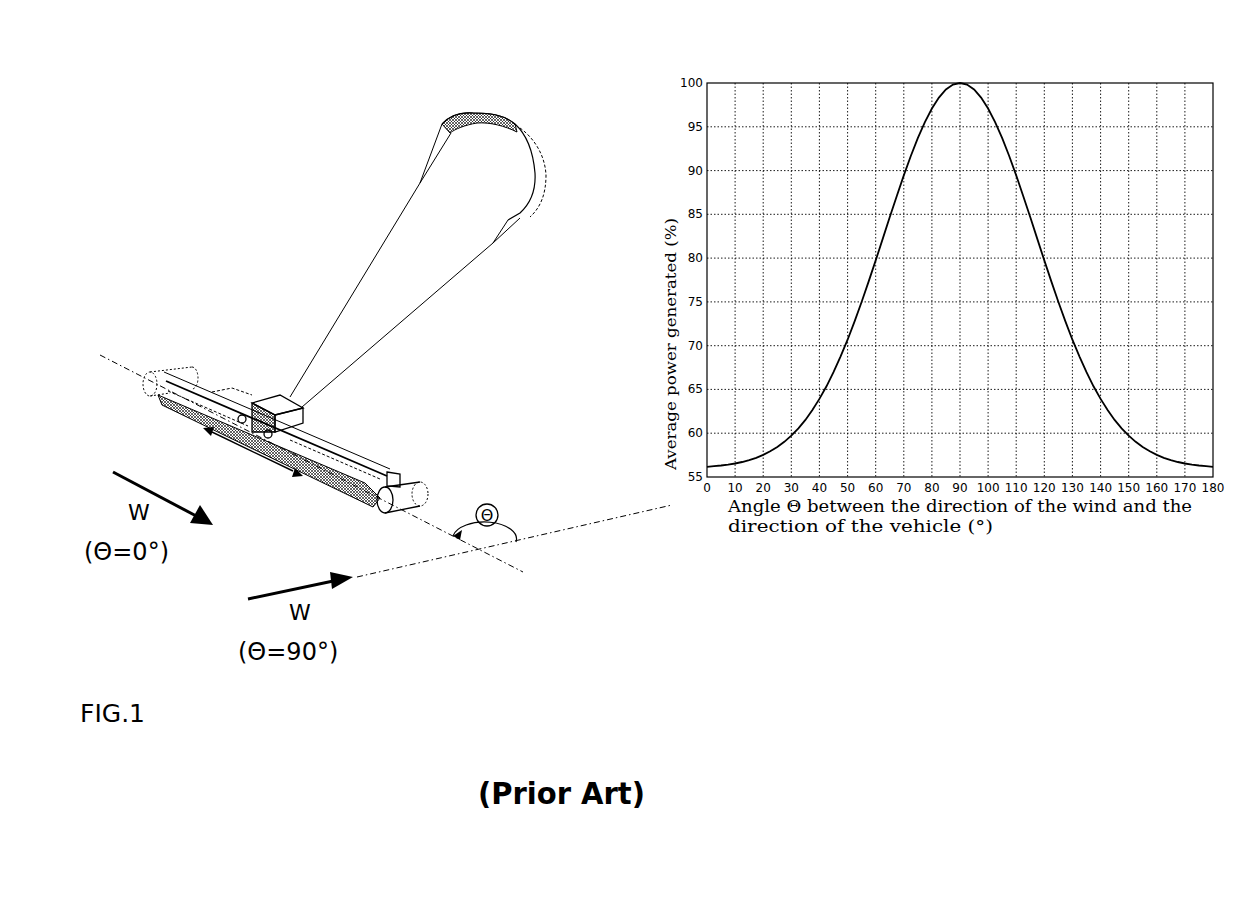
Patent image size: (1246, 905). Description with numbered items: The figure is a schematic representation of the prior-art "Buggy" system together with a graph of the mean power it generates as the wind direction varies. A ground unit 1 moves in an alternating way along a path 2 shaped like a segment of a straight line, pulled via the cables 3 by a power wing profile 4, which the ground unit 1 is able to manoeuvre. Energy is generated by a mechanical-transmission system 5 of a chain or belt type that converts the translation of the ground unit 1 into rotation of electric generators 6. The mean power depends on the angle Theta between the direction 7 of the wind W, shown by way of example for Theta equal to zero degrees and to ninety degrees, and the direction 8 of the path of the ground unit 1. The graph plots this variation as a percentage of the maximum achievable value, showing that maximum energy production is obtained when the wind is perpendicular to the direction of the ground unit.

The ground unit 1 is at (270, 398).
The path 2 is at (282, 429).
The cables 3 is at (405, 265).
The power wing profile 4 is at (498, 163).
The mechanical-transmission system 5 is at (269, 430).
The electric generators 6 is at (170, 366).
The direction of the wind 7 is at (402, 524).
The direction of the path 8 is at (514, 550).